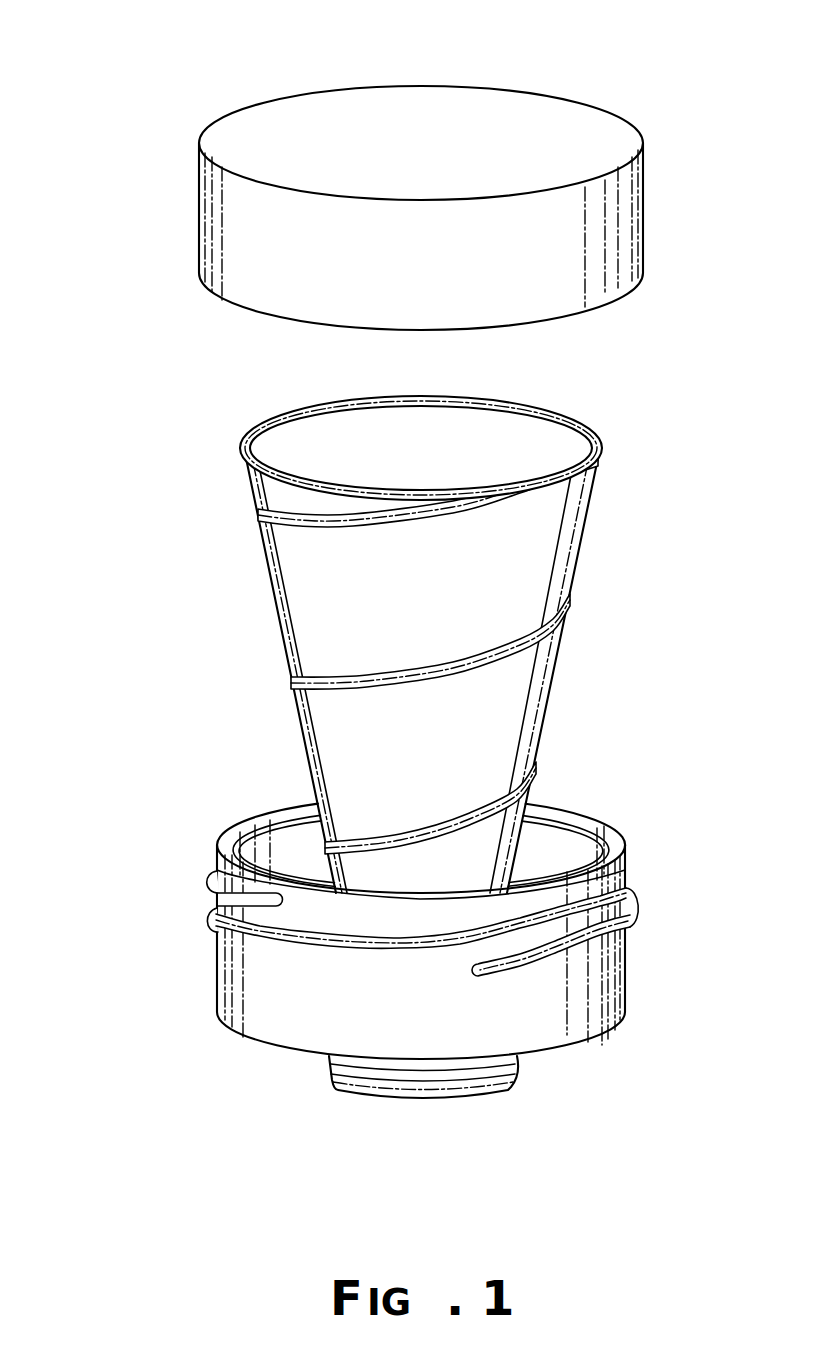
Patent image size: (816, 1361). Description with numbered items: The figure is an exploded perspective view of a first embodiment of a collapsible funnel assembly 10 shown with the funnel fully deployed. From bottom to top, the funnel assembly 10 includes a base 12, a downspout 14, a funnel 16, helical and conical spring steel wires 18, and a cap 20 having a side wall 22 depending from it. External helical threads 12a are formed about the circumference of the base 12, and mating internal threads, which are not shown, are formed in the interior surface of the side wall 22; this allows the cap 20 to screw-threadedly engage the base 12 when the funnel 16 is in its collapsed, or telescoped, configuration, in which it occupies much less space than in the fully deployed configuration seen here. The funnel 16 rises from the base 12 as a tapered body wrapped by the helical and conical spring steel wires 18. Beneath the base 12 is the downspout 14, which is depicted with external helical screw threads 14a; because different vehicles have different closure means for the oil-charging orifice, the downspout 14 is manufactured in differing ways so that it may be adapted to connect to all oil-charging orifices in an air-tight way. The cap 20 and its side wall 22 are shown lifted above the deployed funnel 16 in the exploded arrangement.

The funnel assembly 10 is at (220, 75).
The base 12 is at (424, 1029).
The external helical threads 12a is at (272, 940).
The downspout 14 is at (367, 1100).
The external helical screw threads 14a is at (420, 1082).
The funnel 16 is at (270, 573).
The helical and conical spring steel wires 18 is at (469, 660).
The cap 20 is at (395, 160).
The side wall 22 is at (445, 282).